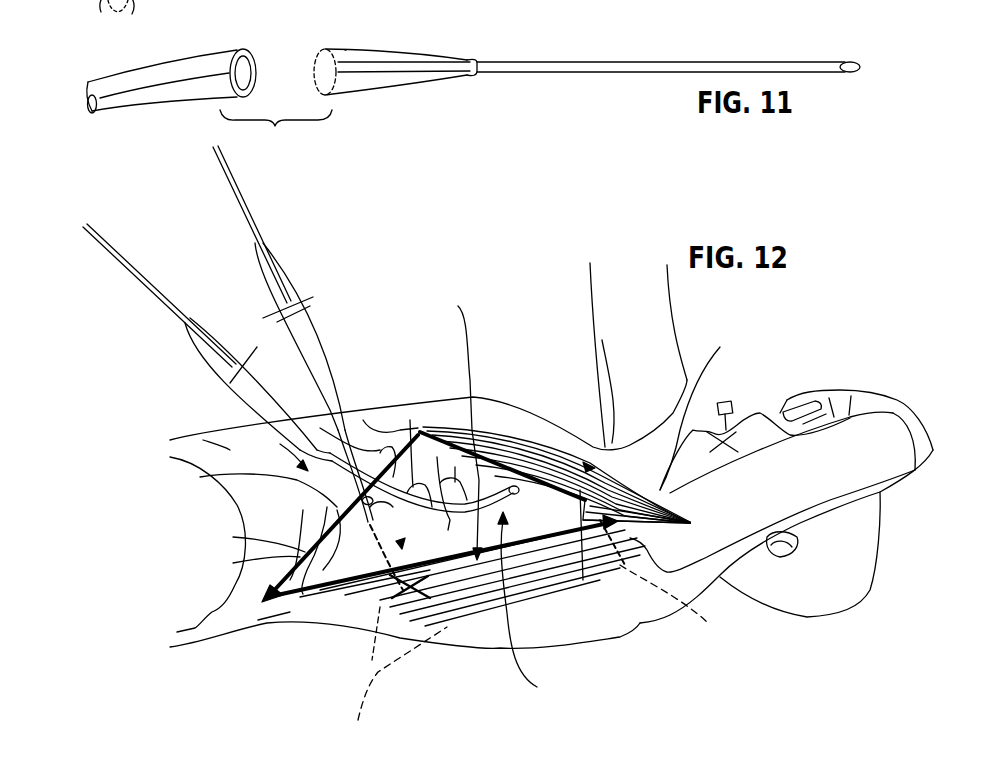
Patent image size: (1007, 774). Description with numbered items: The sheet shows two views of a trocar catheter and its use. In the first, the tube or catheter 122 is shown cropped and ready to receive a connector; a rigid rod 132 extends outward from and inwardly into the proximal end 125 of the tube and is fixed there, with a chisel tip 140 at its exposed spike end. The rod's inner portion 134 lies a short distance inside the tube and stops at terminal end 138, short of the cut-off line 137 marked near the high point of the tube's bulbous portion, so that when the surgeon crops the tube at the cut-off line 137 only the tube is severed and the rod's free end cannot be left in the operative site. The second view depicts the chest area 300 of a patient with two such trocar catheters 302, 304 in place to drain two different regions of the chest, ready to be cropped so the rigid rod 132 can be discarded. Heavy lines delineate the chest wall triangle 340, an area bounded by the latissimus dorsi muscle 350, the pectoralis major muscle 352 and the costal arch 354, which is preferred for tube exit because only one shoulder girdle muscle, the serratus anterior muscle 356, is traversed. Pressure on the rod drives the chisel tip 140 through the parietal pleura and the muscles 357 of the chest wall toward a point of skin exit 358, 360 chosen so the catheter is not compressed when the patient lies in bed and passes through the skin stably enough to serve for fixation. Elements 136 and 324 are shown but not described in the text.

In FIG. 11, the tube or catheter 122 is at (143, 70).
In FIG. 11, the tube lumen section 136 is at (220, 50).
In FIG. 11, the cut-off line 137 is at (310, 60).
In FIG. 12, the cut-off line 137 is at (307, 297).
In FIG. 11, the terminal end of the rigid rod 138 is at (327, 47).
In FIG. 11, the inner portion of the rigid rod 134 is at (405, 72).
In FIG. 11, the proximal end of the tube 125 is at (472, 60).
In FIG. 11, the rigid rod 132 is at (608, 61).
In FIG. 12, the rigid rod 132 is at (242, 206).
In FIG. 11, the chisel tip 140 is at (847, 66).
In FIG. 12, the trocar catheter 302 is at (302, 330).
In FIG. 12, the trocar catheter 304 is at (262, 408).
In FIG. 12, the chest area 300 is at (274, 452).
In FIG. 12, the latissimus dorsi muscle 350 is at (450, 429).
In FIG. 12, the pectoralis major muscle 352 is at (705, 407).
In FIG. 12, the costal arch 354 is at (200, 477).
In FIG. 12, the chest wall triangle 340 is at (233, 537).
In FIG. 12, the point of skin exit 358 is at (233, 563).
In FIG. 12, the serratus anterior muscle 356 is at (403, 540).
In FIG. 12, the muscles 357 is at (357, 660).
In FIG. 12, the point of skin exit 360 is at (539, 608).
In FIG. 12, the tunneled catheter path 324 is at (543, 634).